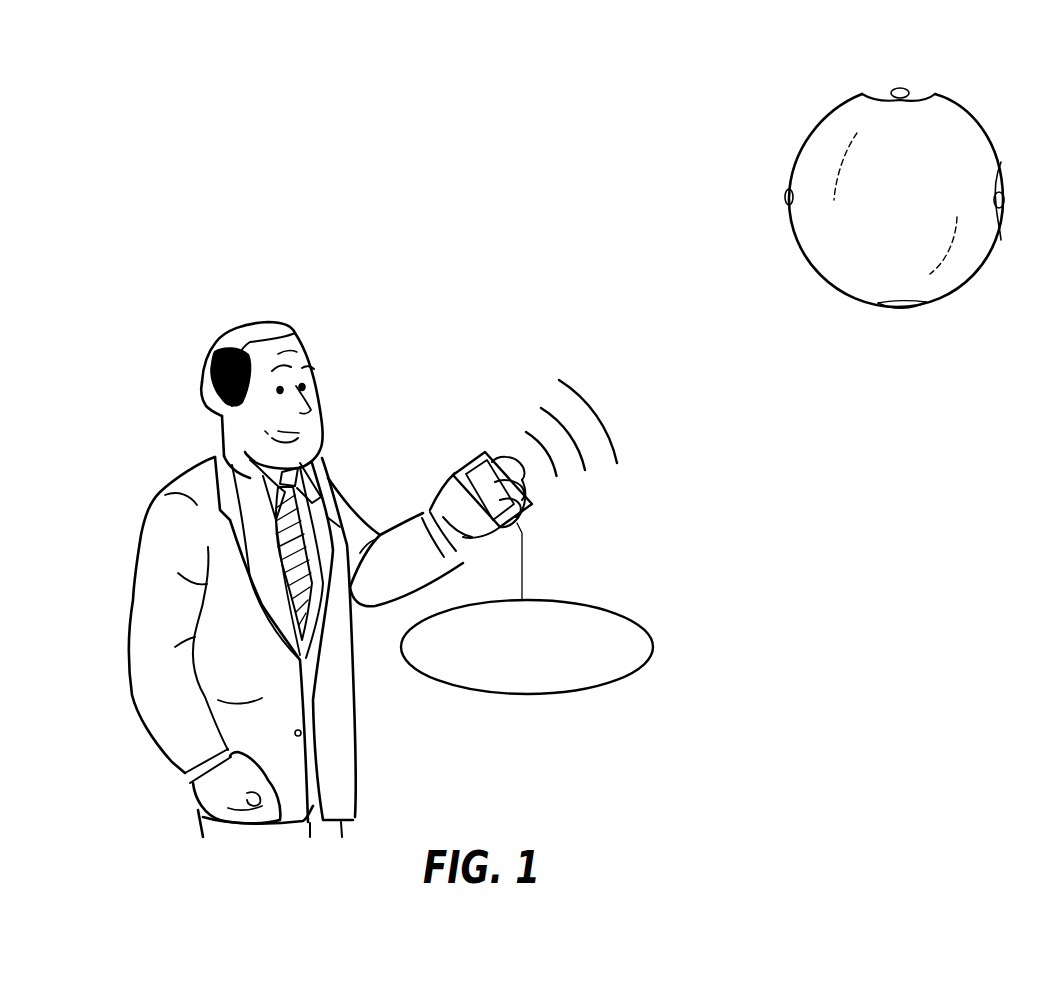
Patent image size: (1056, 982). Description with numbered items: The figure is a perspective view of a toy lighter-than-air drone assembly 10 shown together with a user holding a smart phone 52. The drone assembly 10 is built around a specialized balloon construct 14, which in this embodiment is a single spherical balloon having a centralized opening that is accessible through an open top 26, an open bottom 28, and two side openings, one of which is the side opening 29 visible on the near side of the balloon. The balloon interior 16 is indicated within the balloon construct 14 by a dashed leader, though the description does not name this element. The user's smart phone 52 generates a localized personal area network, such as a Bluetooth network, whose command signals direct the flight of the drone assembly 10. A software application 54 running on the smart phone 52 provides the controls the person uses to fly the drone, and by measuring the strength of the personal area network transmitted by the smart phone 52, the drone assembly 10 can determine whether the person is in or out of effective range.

The lighter-than-air drone assembly 10 is at (900, 199).
The balloon construct 14 is at (985, 123).
The inner core 16 is at (838, 262).
The open top 26 is at (925, 92).
The open bottom 28 is at (899, 309).
The side opening 29 is at (998, 182).
The smart phone 52 is at (470, 465).
The software application 54 is at (619, 682).